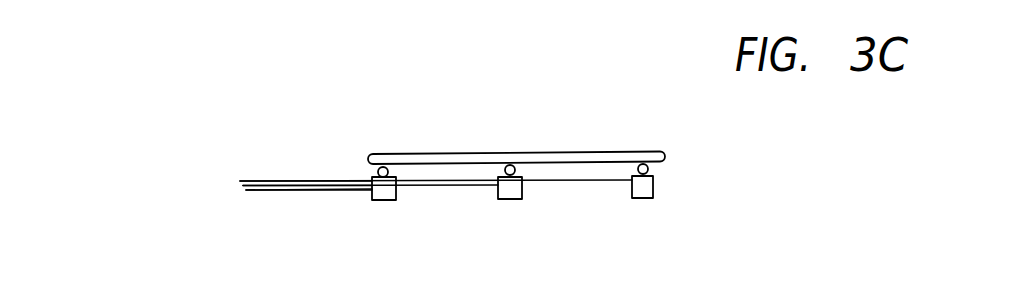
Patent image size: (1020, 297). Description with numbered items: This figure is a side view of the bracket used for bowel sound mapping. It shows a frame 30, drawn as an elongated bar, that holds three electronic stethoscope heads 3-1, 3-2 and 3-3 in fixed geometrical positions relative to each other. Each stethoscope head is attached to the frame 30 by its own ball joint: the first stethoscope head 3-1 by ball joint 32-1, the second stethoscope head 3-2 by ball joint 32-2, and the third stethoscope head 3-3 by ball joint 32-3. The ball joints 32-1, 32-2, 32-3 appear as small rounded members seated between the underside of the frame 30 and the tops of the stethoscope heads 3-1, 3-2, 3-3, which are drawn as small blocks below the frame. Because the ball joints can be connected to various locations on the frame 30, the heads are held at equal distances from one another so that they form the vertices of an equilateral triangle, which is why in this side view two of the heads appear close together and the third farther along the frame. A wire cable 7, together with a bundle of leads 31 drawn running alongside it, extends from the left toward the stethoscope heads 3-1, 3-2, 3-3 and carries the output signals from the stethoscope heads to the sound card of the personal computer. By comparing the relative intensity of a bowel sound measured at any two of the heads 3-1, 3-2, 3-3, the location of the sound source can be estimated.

The wire cable 7 is at (258, 203).
The fiber bundle 31 is at (338, 203).
The frame 30 is at (460, 154).
The ball joint 32-1 is at (517, 166).
The ball joint 32-2 is at (378, 168).
The ball joint 32-3 is at (648, 165).
The electronic stethoscope head 3-1 is at (508, 190).
The electronic stethoscope head 3-2 is at (385, 193).
The electronic stethoscope head 3-3 is at (653, 187).